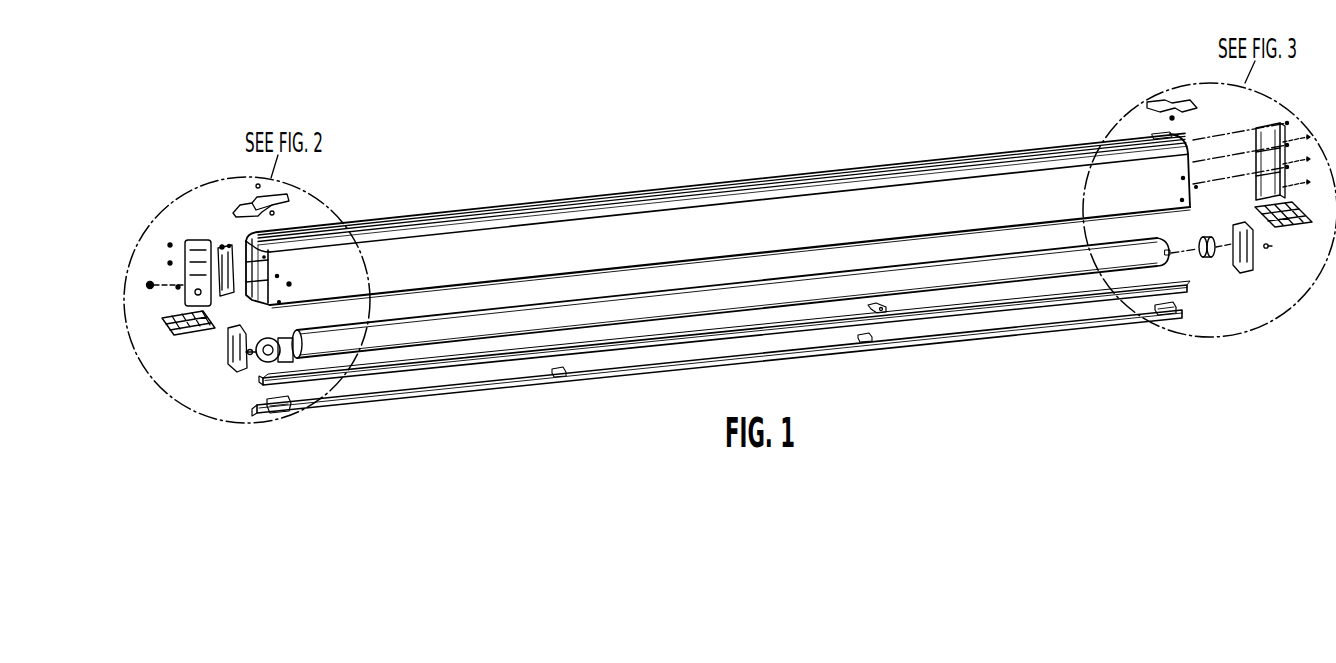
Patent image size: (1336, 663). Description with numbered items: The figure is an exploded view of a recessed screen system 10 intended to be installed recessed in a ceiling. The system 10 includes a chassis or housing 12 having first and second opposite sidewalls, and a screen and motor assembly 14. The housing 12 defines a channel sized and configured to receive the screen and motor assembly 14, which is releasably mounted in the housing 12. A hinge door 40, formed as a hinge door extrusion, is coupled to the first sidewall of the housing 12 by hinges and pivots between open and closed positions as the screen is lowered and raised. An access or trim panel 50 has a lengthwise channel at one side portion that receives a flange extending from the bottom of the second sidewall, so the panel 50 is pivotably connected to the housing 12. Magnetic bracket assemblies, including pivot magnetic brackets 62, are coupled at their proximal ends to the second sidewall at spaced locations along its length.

The recessed screen system 10 is at (683, 130).
The housing 12 is at (874, 135).
The screen and motor assembly 14 is at (1023, 238).
The hinge door 40 is at (466, 409).
The trim panel 50 is at (527, 372).
The pivot magnetic bracket 62 is at (866, 307).